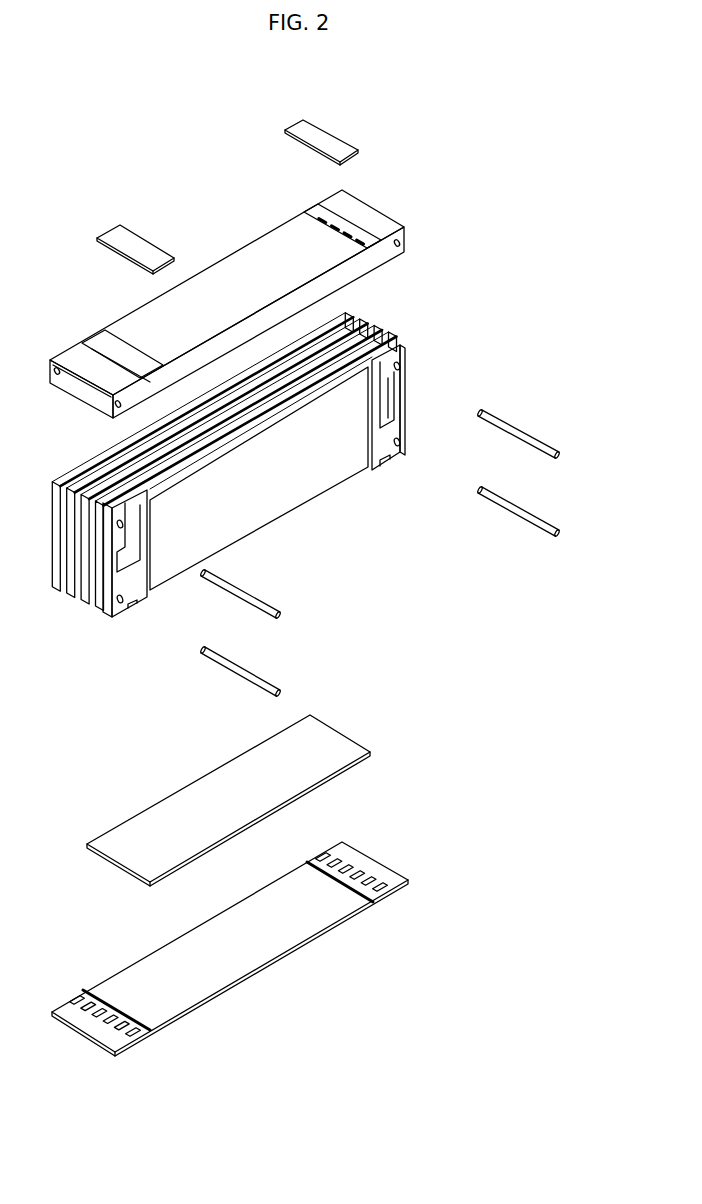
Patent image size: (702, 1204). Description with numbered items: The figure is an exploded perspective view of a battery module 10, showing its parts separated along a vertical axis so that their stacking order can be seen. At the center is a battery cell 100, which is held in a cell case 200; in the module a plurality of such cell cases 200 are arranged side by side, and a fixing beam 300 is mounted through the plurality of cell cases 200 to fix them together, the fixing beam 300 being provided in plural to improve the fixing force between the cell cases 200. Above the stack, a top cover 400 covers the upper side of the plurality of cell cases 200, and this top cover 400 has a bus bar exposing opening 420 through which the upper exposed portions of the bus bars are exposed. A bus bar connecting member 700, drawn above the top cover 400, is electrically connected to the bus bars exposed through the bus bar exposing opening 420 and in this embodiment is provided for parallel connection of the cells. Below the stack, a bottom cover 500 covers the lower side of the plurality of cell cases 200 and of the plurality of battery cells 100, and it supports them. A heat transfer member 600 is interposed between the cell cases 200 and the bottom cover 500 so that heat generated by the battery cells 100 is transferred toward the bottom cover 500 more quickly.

The battery module 10 is at (70, 158).
The battery cell 100 is at (288, 520).
The cell case 200 is at (402, 333).
The fixing beam 300 is at (527, 437).
The top cover 400 is at (249, 293).
The bus bar exposing opening 420 is at (308, 230).
The bottom cover 500 is at (382, 855).
The heat transfer member 600 is at (345, 727).
The bus bar connecting member 700 is at (337, 124).